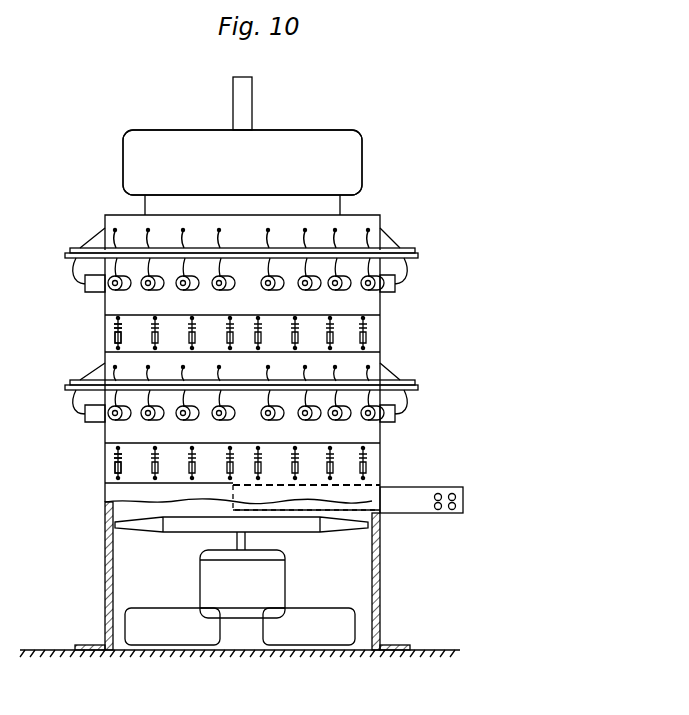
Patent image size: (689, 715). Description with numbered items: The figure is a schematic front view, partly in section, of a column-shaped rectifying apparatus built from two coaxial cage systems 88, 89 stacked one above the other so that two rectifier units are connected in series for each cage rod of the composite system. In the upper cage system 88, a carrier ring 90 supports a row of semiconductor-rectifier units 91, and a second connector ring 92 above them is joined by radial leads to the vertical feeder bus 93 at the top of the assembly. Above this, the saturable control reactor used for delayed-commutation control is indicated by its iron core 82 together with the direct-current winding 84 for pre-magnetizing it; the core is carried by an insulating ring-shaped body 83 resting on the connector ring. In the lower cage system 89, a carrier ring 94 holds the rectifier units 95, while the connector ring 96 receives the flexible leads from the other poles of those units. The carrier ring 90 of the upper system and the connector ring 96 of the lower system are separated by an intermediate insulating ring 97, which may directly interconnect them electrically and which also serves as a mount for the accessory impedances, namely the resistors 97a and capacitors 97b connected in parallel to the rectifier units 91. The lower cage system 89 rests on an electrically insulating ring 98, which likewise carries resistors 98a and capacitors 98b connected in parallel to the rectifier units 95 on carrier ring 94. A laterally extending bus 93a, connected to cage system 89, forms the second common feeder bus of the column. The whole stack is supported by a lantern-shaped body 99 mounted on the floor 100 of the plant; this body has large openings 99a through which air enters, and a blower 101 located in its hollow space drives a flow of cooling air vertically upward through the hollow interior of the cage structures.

The feeder bus 93 is at (243, 95).
The iron core of saturable reactor 82 is at (281, 143).
The direct-current winding 84 is at (242, 162).
The insulating ring-shaped body 83 is at (160, 203).
The second connector ring 92 is at (355, 223).
The semiconductor-rectifier units 91 is at (372, 306).
The carrier ring 90 is at (363, 309).
The cage system 88 is at (283, 305).
The intermediate insulating ring 97 is at (375, 330).
The resistors 97a is at (114, 338).
The capacitors 97b is at (113, 327).
The connector ring 96 is at (368, 357).
The rectifier units 95 is at (372, 435).
The carrier ring 94 is at (365, 438).
The cage system 89 is at (280, 437).
The insulating ring 98 is at (375, 462).
The resistors 98a is at (114, 470).
The capacitors 98b is at (113, 458).
The laterally extending bus 93a is at (461, 498).
The lantern-shaped body 99 is at (377, 555).
The blower 101 is at (272, 588).
The floor 100 is at (432, 648).
The openings 99a is at (175, 633).